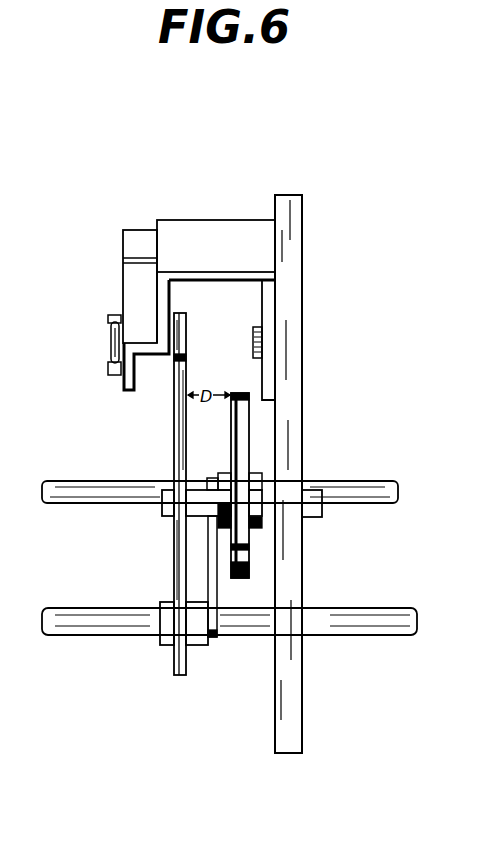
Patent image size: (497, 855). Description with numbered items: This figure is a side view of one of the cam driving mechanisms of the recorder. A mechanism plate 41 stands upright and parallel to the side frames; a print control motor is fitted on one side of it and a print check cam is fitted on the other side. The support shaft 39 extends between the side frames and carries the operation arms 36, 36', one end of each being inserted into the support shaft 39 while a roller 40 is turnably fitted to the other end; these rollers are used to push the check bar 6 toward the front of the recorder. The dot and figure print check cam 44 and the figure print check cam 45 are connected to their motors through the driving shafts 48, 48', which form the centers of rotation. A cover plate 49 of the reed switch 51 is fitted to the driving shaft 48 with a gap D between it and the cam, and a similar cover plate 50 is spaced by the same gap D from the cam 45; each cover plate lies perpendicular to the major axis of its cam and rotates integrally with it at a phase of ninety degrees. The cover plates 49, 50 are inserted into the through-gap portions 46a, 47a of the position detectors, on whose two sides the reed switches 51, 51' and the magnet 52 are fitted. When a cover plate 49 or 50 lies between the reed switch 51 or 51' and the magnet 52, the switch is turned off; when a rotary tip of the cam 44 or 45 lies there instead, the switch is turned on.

The check bar 6 is at (357, 491).
The operation arm 36 is at (176, 422).
The operation arm 36' is at (176, 422).
The support shaft 39 is at (373, 618).
The roller 40 is at (222, 473).
The mechanism plate 41 is at (288, 370).
The dot and figure print check cam 44 is at (234, 539).
The figure print check cam 45 is at (240, 580).
The through-gap portion 46a is at (151, 340).
The through-gap portion 47a is at (193, 300).
The driving shaft 48 is at (200, 513).
The driving shaft 48' is at (200, 513).
The cover plate 49 is at (165, 518).
The cover plate 50 is at (177, 676).
The reed switch 51 is at (77, 345).
The reed switch 51' is at (77, 345).
The magnet 52 is at (253, 342).